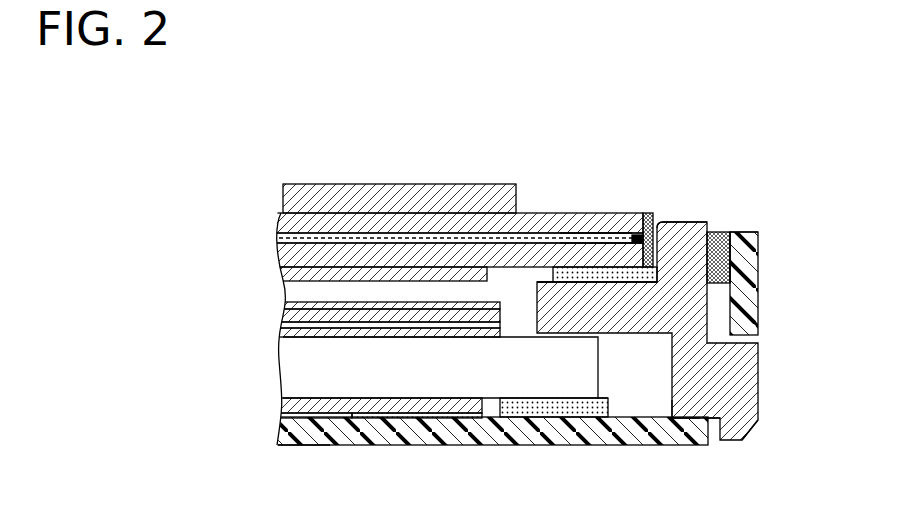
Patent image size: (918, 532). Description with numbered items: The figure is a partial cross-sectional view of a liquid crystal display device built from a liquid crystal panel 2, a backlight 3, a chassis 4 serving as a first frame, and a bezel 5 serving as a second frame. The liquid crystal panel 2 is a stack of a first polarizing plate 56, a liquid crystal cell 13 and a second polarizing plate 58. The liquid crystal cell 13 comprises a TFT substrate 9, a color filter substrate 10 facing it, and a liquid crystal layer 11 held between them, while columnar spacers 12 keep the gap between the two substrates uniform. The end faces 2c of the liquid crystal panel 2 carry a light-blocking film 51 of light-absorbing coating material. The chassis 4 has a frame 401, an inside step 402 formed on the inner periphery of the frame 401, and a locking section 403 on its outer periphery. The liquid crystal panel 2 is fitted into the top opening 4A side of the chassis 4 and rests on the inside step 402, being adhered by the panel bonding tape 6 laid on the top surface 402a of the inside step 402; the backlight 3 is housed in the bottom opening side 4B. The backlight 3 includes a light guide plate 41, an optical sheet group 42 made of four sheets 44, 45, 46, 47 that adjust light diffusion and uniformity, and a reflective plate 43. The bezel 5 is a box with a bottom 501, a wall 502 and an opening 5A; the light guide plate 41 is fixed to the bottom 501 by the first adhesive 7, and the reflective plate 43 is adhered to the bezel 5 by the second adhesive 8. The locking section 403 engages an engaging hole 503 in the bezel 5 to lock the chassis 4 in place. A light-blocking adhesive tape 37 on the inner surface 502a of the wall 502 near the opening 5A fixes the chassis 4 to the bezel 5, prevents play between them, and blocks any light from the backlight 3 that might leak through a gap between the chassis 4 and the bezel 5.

The liquid crystal panel 2 is at (526, 162).
The backlight 3 is at (268, 359).
The chassis 4 is at (760, 352).
The top opening 4A is at (661, 224).
The bottom opening side 4B is at (668, 402).
The bezel 5 is at (378, 456).
The opening 5A is at (732, 232).
The panel bonding tape 6 is at (608, 275).
The first adhesive 7 is at (541, 410).
The second adhesive 8 is at (443, 418).
The TFT substrate 9 is at (283, 238).
The color filter substrate 10 is at (283, 222).
The liquid crystal layer 11 is at (578, 236).
The columnar spacers 12 is at (637, 237).
The liquid crystal cell 13 is at (180, 172).
The light-blocking adhesive tape 37 is at (717, 232).
The light guide plate 41 is at (292, 381).
The optical sheet group 42 is at (178, 262).
The reflective plate 43 is at (283, 403).
The reflective sheet 44 is at (283, 305).
The reflective sheet 45 is at (283, 314).
The reflective sheet 46 is at (283, 325).
The reflective sheet 47 is at (283, 333).
The light-blocking film 51 is at (648, 214).
The first polarizing plate 56 is at (385, 184).
The second polarizing plate 58 is at (283, 275).
The frame 401 is at (685, 223).
The inside step 402 is at (638, 327).
The top surface 402a is at (545, 282).
The locking section 403 is at (750, 422).
The bottom 501 is at (295, 445).
The wall 502 is at (750, 278).
The inner surface 502a is at (735, 323).
The engaging hole 503 is at (713, 418).
The end faces 2c is at (738, 250).